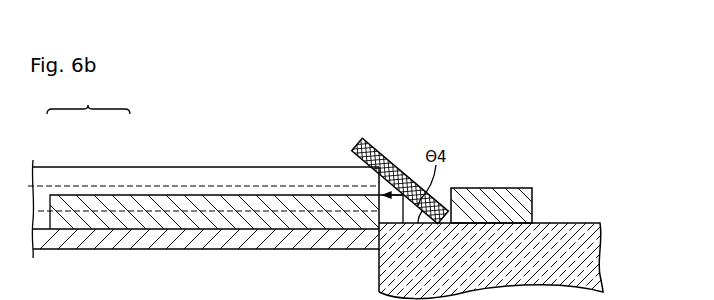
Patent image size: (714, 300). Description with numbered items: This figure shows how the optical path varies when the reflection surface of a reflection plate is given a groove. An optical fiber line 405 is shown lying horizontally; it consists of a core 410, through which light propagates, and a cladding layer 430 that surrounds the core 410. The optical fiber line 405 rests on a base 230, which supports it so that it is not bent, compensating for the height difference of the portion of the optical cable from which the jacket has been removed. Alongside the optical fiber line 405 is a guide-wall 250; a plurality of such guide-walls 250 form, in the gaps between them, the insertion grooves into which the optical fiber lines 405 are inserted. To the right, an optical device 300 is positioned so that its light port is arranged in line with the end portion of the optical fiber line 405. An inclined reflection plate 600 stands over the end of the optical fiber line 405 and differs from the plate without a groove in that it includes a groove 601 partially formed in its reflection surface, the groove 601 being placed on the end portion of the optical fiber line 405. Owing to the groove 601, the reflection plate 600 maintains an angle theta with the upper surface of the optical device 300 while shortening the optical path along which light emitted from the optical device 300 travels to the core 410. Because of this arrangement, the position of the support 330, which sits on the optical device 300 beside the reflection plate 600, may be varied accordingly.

The optical fiber line 405 is at (88, 99).
The core 410 is at (69, 192).
The cladding layer 430 is at (118, 172).
The guide-wall 250 is at (207, 200).
The base 230 is at (267, 238).
The reflection plate 600 is at (388, 160).
The groove 601 is at (367, 163).
The support 330 is at (493, 198).
The optical device 300 is at (590, 253).